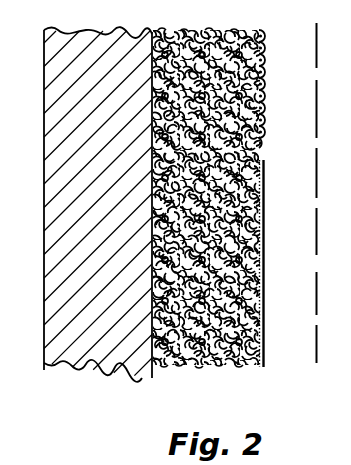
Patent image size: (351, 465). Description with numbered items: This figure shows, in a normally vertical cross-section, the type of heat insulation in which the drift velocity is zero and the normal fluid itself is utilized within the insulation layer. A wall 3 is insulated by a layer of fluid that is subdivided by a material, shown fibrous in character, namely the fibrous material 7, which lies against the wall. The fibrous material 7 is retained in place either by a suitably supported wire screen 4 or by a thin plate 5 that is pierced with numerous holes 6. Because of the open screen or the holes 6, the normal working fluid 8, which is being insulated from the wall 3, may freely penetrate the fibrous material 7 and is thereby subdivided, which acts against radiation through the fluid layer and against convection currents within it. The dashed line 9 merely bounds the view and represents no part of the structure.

The wall 3 is at (55, 87).
The wire screen 4 is at (264, 41).
The thin plate 5 is at (265, 163).
The holes 6 is at (265, 185).
The fibrous material 7 is at (243, 146).
The normal working fluid 8 is at (292, 213).
The view boundary 9 is at (318, 235).